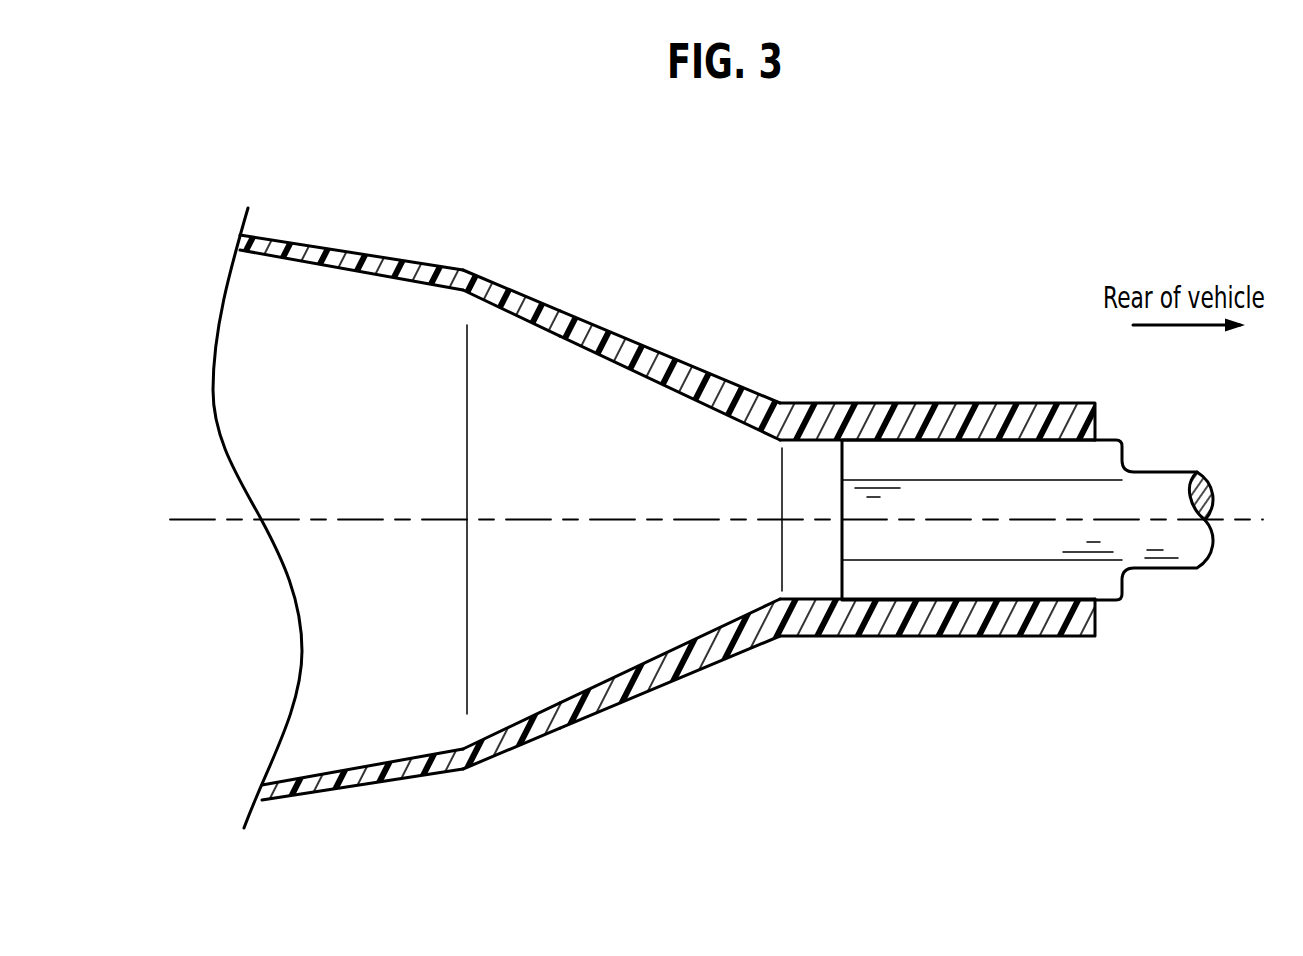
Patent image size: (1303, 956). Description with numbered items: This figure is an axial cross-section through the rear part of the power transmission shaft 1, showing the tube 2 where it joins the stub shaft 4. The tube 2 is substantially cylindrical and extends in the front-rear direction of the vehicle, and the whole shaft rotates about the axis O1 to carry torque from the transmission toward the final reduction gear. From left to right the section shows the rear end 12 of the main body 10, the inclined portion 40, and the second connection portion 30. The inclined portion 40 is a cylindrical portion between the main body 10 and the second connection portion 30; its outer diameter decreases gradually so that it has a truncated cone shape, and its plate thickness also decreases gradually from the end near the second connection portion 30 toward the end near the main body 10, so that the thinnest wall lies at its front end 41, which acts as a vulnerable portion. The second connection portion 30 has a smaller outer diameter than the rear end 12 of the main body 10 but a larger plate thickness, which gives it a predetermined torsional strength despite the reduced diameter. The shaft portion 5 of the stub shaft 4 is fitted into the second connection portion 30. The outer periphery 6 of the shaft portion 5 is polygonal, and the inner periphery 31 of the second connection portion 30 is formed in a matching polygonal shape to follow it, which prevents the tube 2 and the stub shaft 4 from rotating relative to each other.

The power transmission shaft 1 is at (800, 198).
The tube 2 is at (833, 332).
The stub shaft 4 is at (1172, 438).
The shaft portion 5 is at (1032, 500).
The outer periphery 6 is at (978, 542).
The main body 10 is at (385, 268).
The rear end 12 is at (363, 497).
The second connection portion 30 is at (943, 420).
The inner periphery 31 is at (905, 603).
The inclined portion 40 is at (662, 363).
The front end 41 is at (493, 297).
The axis O1 is at (183, 520).